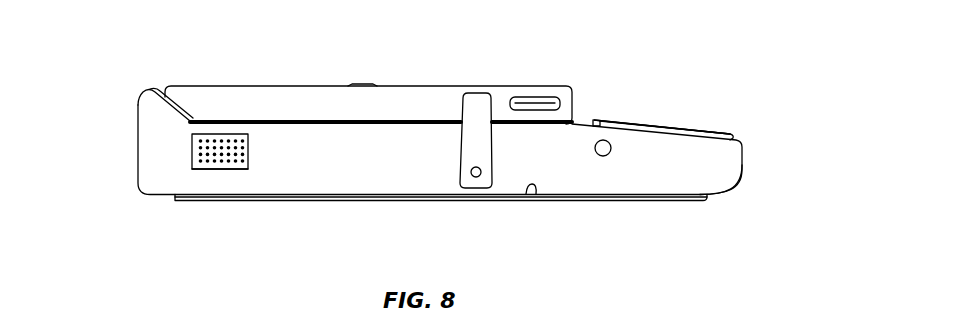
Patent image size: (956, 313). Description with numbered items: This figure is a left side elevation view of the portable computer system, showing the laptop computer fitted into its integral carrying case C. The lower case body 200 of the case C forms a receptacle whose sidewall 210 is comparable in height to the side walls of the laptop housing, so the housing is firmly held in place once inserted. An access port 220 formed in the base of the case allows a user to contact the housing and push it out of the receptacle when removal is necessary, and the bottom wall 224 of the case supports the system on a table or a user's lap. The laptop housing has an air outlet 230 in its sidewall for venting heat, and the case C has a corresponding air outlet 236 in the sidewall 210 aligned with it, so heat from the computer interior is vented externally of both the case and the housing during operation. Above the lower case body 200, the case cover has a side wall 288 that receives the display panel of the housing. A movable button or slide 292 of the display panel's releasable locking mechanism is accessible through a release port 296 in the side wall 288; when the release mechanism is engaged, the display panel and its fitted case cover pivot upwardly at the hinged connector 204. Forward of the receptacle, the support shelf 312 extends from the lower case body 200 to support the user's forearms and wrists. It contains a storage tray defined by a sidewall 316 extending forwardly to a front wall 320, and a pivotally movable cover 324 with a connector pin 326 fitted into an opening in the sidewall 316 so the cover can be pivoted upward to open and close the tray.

The lower case body 200 is at (649, 199).
The hinged connector 204 is at (145, 90).
The sidewall 210 is at (377, 162).
The access port 220 is at (457, 195).
The bottom wall 224 is at (533, 196).
The air outlet 230 is at (201, 138).
The air outlet 236 is at (233, 175).
The side wall 288 is at (392, 90).
The movable button or slide 292 is at (545, 103).
The release port 296 is at (523, 98).
The support shelf 312 is at (735, 126).
The sidewall 316 is at (690, 173).
The front wall 320 is at (742, 156).
The movable cover 324 is at (678, 125).
The connector pin 326 is at (609, 141).
The carrying case C is at (644, 75).